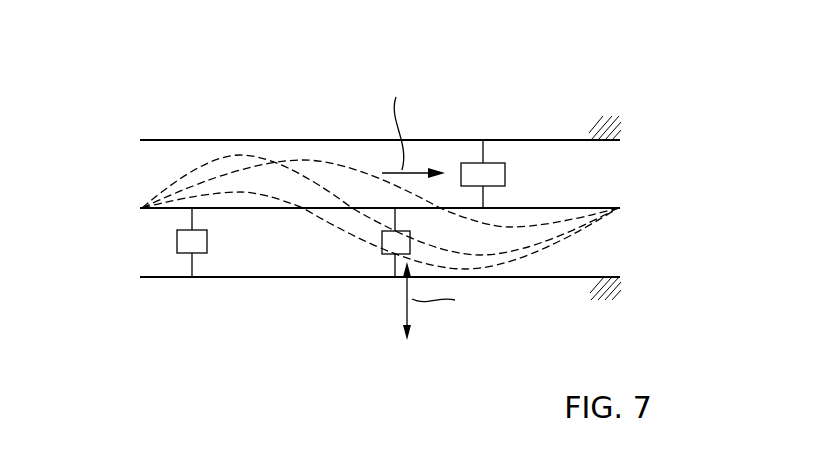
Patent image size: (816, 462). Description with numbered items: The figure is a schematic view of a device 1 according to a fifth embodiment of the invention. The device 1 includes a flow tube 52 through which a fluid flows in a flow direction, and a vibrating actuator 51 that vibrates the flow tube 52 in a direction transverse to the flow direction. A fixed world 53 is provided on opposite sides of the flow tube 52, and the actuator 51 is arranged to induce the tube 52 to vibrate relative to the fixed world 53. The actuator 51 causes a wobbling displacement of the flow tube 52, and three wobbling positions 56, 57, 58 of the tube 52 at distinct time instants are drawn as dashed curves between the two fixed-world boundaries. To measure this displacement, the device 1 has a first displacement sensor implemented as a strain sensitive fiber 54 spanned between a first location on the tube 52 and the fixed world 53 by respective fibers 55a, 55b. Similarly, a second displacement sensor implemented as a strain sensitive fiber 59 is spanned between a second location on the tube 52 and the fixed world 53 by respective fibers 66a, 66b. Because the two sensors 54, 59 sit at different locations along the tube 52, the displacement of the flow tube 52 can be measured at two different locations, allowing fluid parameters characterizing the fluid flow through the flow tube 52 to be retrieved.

The device 1 is at (630, 90).
The vibrating actuator 51 is at (385, 254).
The flow tube 52 is at (257, 210).
The fixed world 53 is at (568, 140).
The strain sensitive fiber 54 is at (506, 172).
The fiber 55a is at (481, 152).
The fiber 55b is at (485, 196).
The wobbling position 56 is at (348, 164).
The wobbling position 57 is at (310, 177).
The wobbling position 58 is at (253, 192).
The strain sensitive fiber 59 is at (177, 246).
The fiber 66a is at (190, 220).
The fiber 66b is at (191, 266).